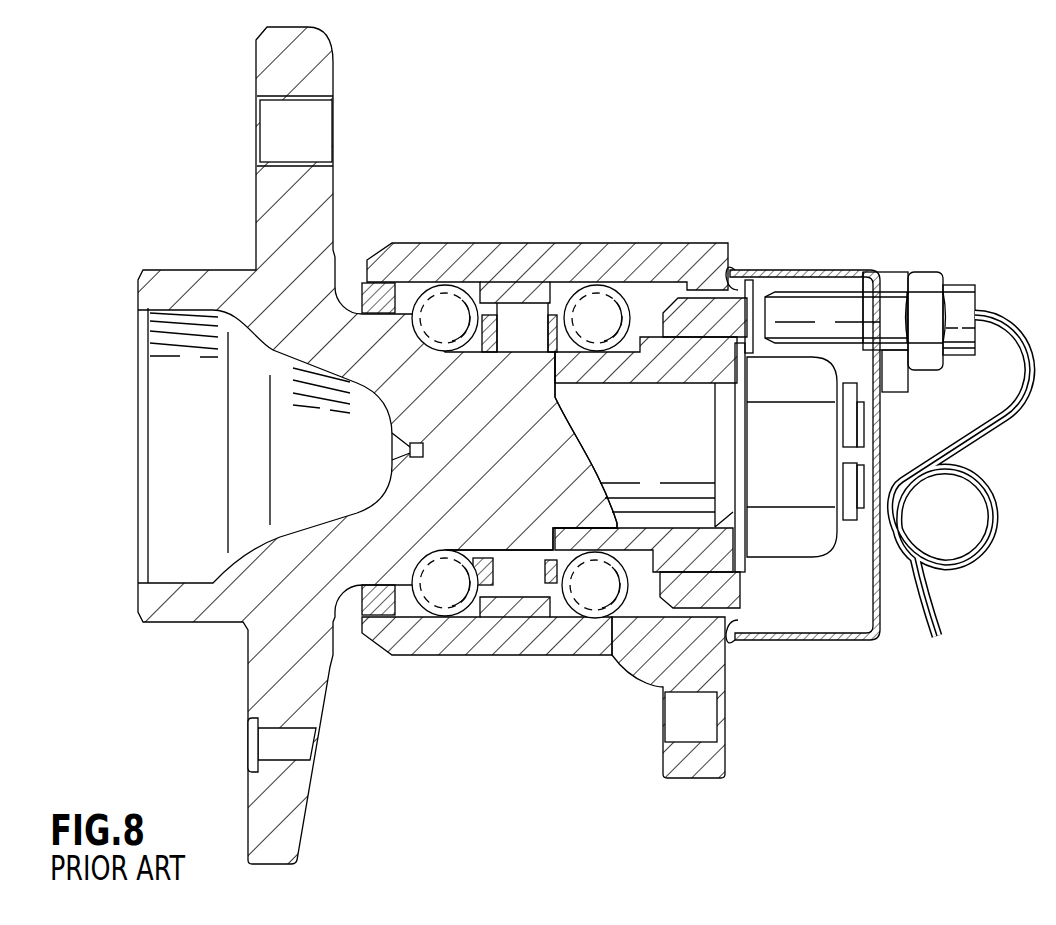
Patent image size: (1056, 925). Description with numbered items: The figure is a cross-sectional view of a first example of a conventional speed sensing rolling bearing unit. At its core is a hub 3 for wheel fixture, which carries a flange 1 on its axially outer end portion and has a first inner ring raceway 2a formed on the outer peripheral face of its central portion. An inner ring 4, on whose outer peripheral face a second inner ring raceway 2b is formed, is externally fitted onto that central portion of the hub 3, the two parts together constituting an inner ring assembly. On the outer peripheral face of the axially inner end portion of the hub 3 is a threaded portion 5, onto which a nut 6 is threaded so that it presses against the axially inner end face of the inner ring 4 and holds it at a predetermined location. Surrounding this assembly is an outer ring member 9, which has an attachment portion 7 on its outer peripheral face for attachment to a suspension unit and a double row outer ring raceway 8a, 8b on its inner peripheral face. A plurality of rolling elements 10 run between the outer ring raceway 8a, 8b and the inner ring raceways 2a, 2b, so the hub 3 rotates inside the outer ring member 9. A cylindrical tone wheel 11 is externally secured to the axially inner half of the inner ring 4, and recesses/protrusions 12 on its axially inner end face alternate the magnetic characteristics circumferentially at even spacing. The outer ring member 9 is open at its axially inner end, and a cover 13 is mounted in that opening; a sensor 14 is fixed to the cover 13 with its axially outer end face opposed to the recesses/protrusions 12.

The flange 1 is at (262, 237).
The first inner ring raceway 2a is at (432, 585).
The second inner ring raceway 2b is at (612, 618).
The hub 3 is at (532, 363).
The inner ring 4 is at (641, 333).
The threaded portion 5 is at (847, 382).
The nut 6 is at (807, 495).
The attachment portion 7 is at (708, 775).
The outer ring raceway 8a is at (457, 600).
The outer ring raceway 8b is at (593, 292).
The outer ring member 9 is at (478, 252).
The rolling elements 10 is at (447, 290).
The tone wheel 11 is at (737, 280).
The recesses/protrusions 12 is at (752, 305).
The cover 13 is at (817, 270).
The sensor 14 is at (843, 303).